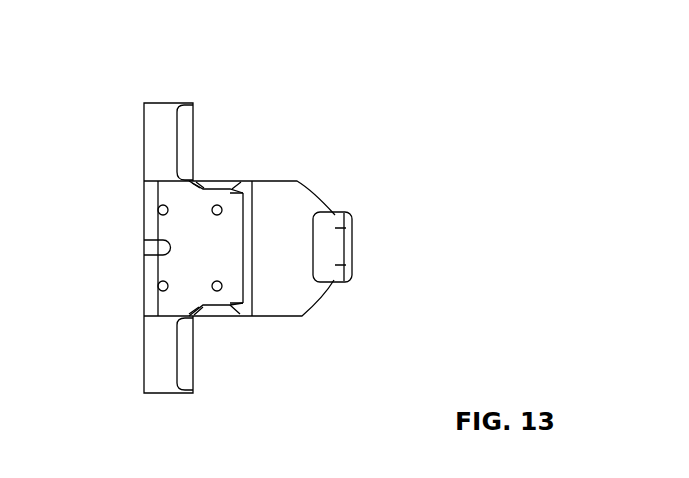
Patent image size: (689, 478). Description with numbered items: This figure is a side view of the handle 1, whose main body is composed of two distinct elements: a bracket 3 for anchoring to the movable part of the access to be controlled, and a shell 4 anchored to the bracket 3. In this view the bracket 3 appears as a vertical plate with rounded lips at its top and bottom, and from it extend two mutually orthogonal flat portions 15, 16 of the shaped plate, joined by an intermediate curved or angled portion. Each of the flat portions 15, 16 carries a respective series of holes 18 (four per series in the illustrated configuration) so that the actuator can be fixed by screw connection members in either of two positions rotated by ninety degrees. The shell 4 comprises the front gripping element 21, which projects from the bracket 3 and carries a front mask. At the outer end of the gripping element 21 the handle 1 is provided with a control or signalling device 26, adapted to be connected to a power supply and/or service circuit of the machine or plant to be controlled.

The handle 1 is at (377, 128).
The bracket 3 is at (138, 185).
The shell 4 is at (178, 102).
The flat portion 15 is at (157, 270).
The flat portion 16 is at (236, 270).
The holes 18 is at (212, 211).
The front gripping element 21 is at (292, 200).
The control or signalling device 26 is at (343, 242).